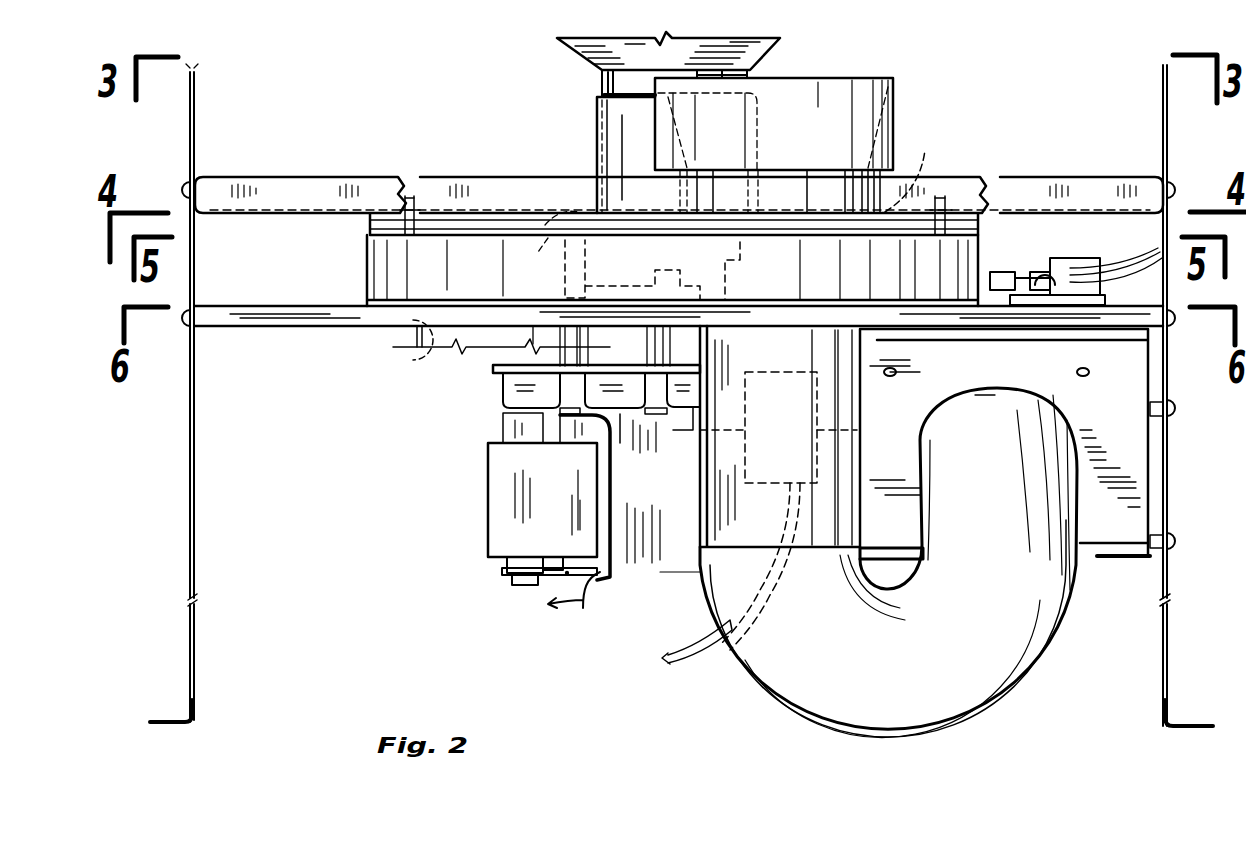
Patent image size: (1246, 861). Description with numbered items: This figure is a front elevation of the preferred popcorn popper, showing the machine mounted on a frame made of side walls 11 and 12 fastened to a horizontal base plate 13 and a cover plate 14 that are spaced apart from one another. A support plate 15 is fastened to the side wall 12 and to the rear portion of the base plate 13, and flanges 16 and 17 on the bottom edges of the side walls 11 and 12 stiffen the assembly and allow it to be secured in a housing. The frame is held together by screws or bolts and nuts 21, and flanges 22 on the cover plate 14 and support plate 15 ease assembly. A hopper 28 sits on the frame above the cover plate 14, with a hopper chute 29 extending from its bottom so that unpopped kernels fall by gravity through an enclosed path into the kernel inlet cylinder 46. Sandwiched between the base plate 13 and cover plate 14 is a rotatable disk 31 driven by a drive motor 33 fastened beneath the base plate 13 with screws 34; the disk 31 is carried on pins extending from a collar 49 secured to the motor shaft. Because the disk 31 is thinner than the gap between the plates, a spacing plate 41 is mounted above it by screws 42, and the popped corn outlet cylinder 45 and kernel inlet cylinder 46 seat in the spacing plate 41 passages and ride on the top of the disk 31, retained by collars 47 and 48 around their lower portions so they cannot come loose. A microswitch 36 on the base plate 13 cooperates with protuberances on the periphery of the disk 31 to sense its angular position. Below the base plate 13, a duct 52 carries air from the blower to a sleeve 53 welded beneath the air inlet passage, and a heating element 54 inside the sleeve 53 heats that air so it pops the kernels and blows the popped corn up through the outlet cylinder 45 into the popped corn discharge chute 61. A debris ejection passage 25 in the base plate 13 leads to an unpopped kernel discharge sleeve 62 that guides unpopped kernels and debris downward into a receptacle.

The side wall 11 is at (190, 496).
The side wall 12 is at (1168, 631).
The base plate 13 is at (258, 322).
The cover plate 14 is at (232, 215).
The support plate 15 is at (1145, 434).
The flange 16 is at (178, 718).
The flange 17 is at (1190, 724).
The nuts 21 is at (186, 188).
The flanges 22 is at (208, 182).
The debris ejection passage 25 is at (410, 355).
The hopper 28 is at (776, 44).
The hopper chute 29 is at (605, 80).
The disk 31 is at (378, 300).
The drive motor 33 is at (500, 505).
The screws 34 is at (592, 440).
The microswitch 36 is at (1075, 260).
The spacing plate 41 is at (494, 222).
The screws 42 is at (410, 210).
The popped corn outlet cylinder 45 is at (855, 198).
The kernel inlet cylinder 46 is at (596, 110).
The collar 47 is at (549, 241).
The collar 48 is at (912, 168).
The collar 49 is at (652, 272).
The duct 52 is at (1010, 700).
The sleeve 53 is at (730, 506).
The heating element 54 is at (780, 372).
The popped corn discharge chute 61 is at (880, 92).
The unpopped kernel discharge sleeve 62 is at (474, 345).